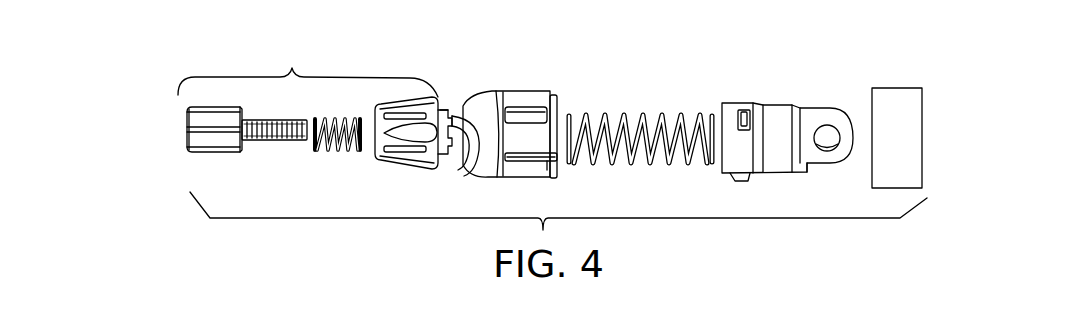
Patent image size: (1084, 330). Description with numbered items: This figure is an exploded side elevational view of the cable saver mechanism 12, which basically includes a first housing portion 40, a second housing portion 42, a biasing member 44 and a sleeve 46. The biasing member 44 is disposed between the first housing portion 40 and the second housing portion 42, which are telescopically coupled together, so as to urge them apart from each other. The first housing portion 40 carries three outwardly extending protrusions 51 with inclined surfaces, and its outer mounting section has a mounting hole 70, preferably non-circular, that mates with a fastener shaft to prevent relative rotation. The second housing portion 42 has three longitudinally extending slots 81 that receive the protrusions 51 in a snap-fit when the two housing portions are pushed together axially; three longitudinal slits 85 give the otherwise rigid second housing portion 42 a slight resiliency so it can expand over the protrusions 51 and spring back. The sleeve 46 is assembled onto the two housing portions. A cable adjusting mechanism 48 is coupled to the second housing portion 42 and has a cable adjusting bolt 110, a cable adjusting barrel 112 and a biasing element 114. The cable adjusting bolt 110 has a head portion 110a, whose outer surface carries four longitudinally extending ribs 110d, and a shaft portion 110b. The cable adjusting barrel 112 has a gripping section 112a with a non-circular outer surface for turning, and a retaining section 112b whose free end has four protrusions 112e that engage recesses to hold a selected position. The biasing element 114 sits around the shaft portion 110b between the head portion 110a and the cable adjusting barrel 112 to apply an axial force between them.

The cable saver mechanism 12 is at (716, 72).
The first housing portion 40 is at (790, 106).
The second housing portion 42 is at (493, 88).
The biasing member 44 is at (607, 117).
The sleeve 46 is at (893, 87).
The cable adjusting mechanism 48 is at (292, 68).
The protrusions 51 is at (738, 126).
The mounting hole 70 is at (833, 151).
The slots 81 is at (541, 108).
The longitudinal slits 85 is at (557, 168).
The cable adjusting bolt 110 is at (217, 152).
The head portion 110a is at (202, 153).
The shaft portion 110b is at (260, 140).
The longitudinally extending ribs 110d is at (195, 122).
The cable adjusting barrel 112 is at (388, 169).
The gripping section 112a is at (423, 169).
The retaining section 112b is at (447, 110).
The protrusions 112e is at (452, 135).
The biasing element 114 is at (337, 153).